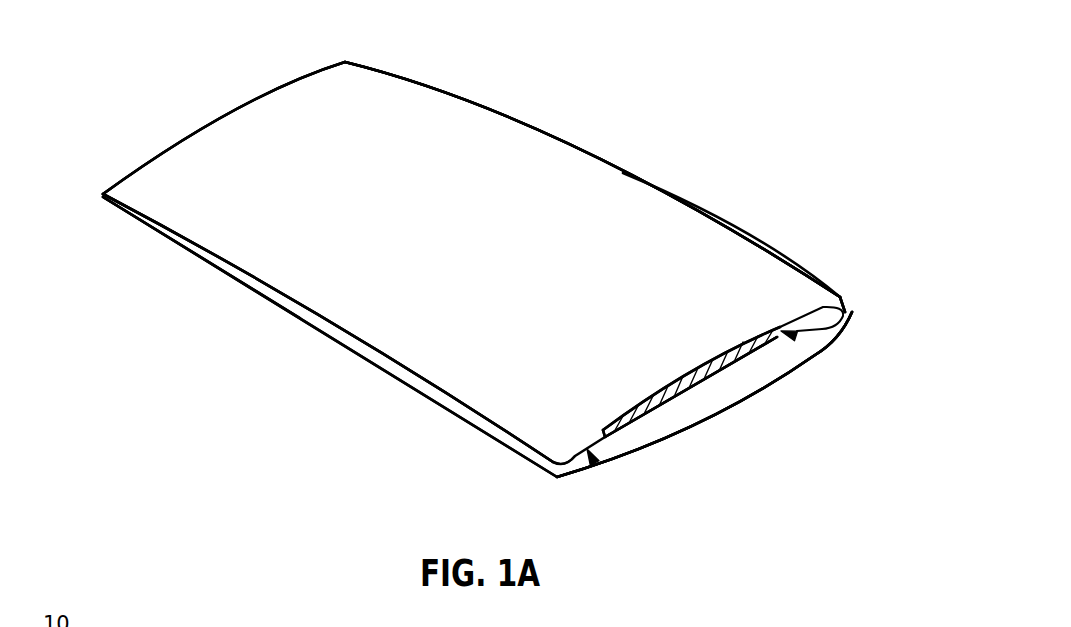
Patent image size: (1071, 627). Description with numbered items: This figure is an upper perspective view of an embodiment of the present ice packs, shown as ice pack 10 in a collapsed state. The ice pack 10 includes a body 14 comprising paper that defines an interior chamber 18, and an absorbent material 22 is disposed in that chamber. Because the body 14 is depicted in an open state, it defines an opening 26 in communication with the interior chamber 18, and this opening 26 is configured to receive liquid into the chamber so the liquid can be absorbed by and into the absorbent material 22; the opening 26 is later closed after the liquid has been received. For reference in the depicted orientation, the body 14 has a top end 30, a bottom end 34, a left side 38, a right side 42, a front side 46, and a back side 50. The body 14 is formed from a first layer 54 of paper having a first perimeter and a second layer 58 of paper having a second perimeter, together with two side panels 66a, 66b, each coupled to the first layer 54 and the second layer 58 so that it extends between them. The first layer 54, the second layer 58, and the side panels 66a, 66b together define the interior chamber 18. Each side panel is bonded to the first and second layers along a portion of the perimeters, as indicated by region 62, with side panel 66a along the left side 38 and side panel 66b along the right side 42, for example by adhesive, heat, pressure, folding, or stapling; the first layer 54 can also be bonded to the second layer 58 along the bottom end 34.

The ice pack 10 is at (104, 38).
The body 14 is at (612, 190).
The interior chamber 18 is at (594, 462).
The absorbent material 22 is at (753, 350).
The opening 26 is at (795, 336).
The top end 30 is at (657, 440).
The bottom end 34 is at (247, 102).
The left side 38 is at (467, 97).
The right side 42 is at (170, 235).
The front side 46 is at (452, 216).
The back side 50 is at (737, 380).
The first layer 54 is at (697, 232).
The second layer 58 is at (713, 413).
The region 62 is at (300, 313).
The side panel 66a is at (781, 318).
The side panel 66b is at (553, 464).